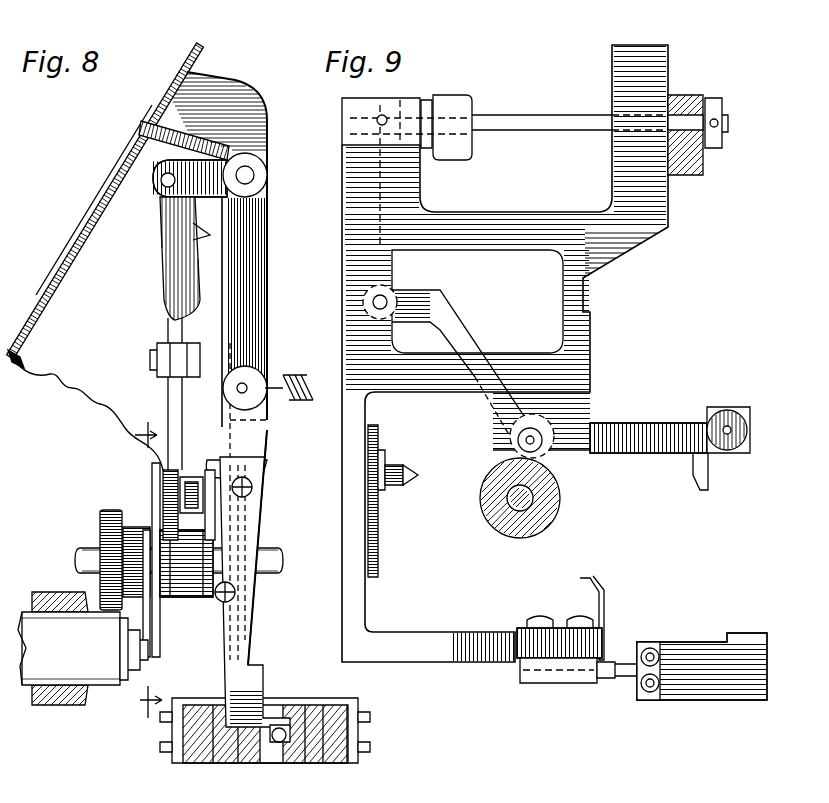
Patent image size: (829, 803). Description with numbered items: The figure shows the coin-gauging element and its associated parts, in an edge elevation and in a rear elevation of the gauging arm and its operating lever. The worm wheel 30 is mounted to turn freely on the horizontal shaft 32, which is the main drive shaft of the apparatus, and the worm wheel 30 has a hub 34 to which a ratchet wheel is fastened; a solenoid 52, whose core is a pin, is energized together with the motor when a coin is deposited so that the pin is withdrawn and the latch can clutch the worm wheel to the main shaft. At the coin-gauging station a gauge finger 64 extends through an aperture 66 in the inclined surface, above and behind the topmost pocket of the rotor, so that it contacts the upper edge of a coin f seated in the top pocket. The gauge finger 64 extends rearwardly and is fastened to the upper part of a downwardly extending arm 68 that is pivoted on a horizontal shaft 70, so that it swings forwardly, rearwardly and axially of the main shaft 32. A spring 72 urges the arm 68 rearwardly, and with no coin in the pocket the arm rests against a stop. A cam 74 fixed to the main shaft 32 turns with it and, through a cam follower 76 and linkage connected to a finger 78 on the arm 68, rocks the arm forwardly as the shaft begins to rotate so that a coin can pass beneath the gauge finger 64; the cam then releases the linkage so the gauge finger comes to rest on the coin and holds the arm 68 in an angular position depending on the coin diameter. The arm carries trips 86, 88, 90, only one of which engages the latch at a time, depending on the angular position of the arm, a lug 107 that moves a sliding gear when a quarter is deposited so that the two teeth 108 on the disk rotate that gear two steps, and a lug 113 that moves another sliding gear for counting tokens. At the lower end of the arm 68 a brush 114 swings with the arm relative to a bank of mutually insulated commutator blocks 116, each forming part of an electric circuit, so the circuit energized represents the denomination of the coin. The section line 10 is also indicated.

In FIG. 8, the coin f is at (128, 148).
In FIG. 8, the gauge finger 64 is at (143, 127).
In FIG. 8, the aperture 66 is at (125, 178).
In FIG. 8, the arm 68 is at (250, 310).
In FIG. 9, the arm 68 is at (626, 308).
In FIG. 8, the horizontal shaft 70 is at (252, 175).
In FIG. 9, the horizontal shaft 70 is at (522, 118).
In FIG. 8, the spring 72 is at (291, 378).
In FIG. 8, the cam 74 is at (190, 600).
In FIG. 9, the cam 74 is at (545, 518).
In FIG. 8, the cam follower 76 is at (191, 478).
In FIG. 9, the cam follower 76 is at (515, 442).
In FIG. 8, the finger 78 is at (165, 197).
In FIG. 9, the trip 86 is at (412, 478).
In FIG. 9, the trip 88 is at (600, 592).
In FIG. 9, the trip 90 is at (605, 432).
In FIG. 8, the lug 107 is at (245, 460).
In FIG. 8, the teeth 108 is at (265, 750).
In FIG. 8, the lug 113 is at (208, 637).
In FIG. 8, the brush 114 is at (282, 728).
In FIG. 9, the brush 114 is at (627, 675).
In FIG. 8, the commutator blocks 116 is at (183, 786).
In FIG. 9, the commutator blocks 116 is at (675, 641).
In FIG. 8, the section line 10 is at (134, 570).
In FIG. 8, the worm wheel 30 is at (103, 512).
In FIG. 8, the horizontal shaft 32 is at (262, 552).
In FIG. 9, the horizontal shaft 32 is at (545, 498).
In FIG. 8, the hub 34 is at (143, 530).
In FIG. 8, the solenoid 52 is at (88, 662).